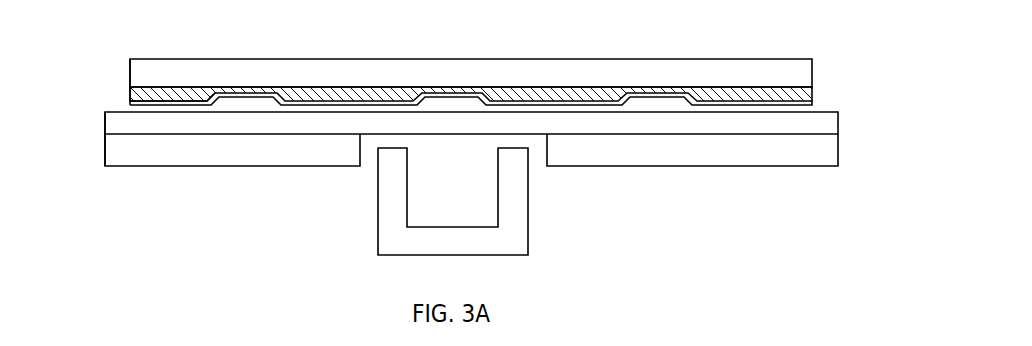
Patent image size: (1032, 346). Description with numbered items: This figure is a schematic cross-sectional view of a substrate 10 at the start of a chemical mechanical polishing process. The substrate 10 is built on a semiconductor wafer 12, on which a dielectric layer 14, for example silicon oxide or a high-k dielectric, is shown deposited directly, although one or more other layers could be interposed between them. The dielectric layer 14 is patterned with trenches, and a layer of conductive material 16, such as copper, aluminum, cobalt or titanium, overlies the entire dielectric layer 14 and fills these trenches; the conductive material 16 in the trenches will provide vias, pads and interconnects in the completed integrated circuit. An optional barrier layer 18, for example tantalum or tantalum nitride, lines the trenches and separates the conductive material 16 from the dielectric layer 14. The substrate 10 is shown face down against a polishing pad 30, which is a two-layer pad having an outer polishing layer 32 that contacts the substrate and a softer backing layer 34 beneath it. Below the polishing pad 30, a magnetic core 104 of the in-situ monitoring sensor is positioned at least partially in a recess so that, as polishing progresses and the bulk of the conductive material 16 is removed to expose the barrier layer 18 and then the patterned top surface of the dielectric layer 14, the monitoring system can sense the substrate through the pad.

The substrate 10 is at (129, 58).
The semiconductor wafer 12 is at (813, 67).
The dielectric layer 14 is at (815, 85).
The conductive material 16 is at (817, 105).
The barrier layer 18 is at (130, 103).
The polishing pad 30 is at (105, 133).
The outer polishing layer 32 is at (843, 120).
The backing layer 34 is at (845, 155).
The magnetic core 104 is at (377, 195).